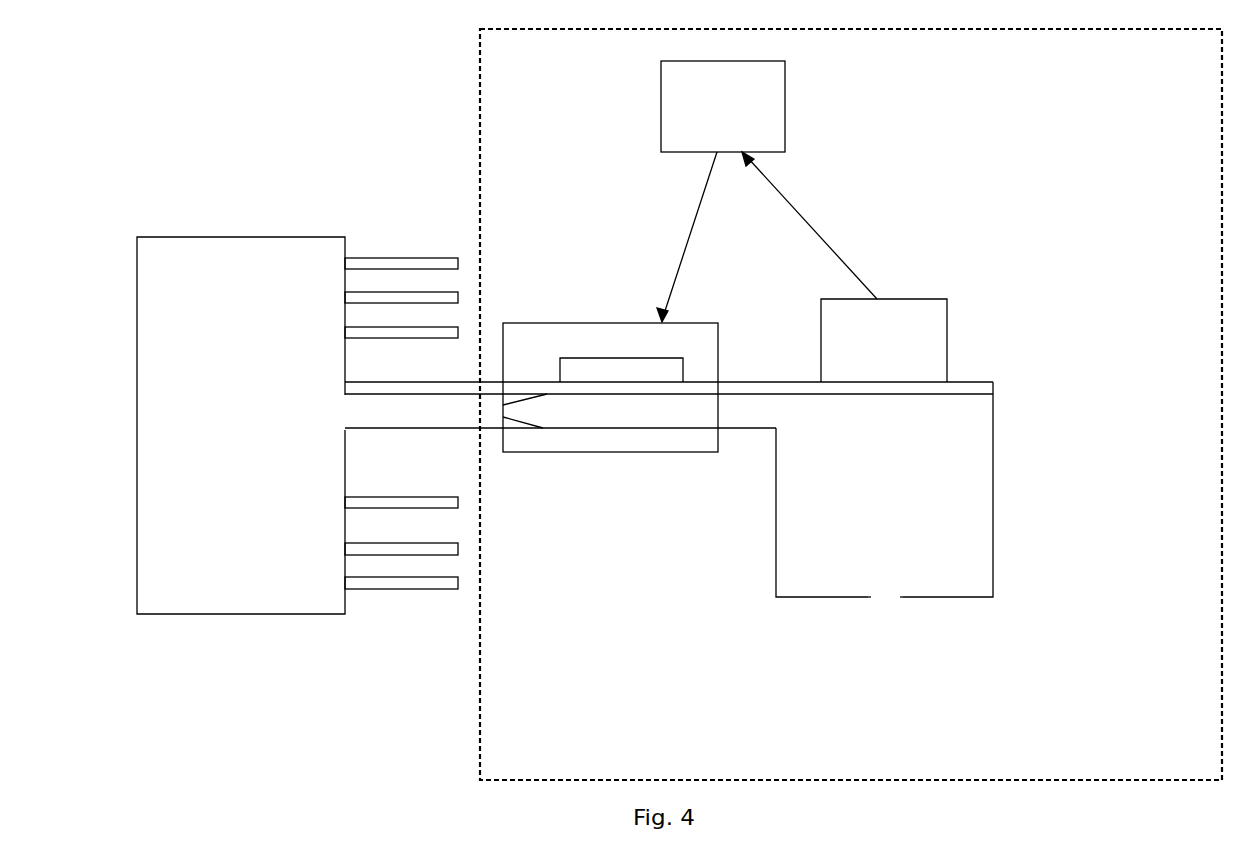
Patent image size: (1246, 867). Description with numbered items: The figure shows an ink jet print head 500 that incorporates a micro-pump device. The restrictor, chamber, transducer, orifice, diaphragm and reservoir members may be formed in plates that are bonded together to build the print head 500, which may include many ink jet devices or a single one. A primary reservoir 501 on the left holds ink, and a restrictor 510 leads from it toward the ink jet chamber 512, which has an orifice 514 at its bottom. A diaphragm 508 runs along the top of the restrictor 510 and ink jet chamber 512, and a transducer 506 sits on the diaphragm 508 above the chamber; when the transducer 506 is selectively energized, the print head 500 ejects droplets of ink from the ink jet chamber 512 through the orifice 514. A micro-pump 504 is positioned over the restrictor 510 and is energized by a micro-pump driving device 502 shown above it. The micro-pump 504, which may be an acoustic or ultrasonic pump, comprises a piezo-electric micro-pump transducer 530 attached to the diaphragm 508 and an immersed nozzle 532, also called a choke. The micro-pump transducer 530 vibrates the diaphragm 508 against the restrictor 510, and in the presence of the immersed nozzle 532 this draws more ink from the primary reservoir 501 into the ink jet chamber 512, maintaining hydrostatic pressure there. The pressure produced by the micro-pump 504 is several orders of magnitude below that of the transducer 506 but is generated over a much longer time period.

The print head 500 is at (851, 421).
The primary reservoir 501 is at (297, 479).
The micro-pump driving device 502 is at (682, 107).
The micro-pump 504 is at (615, 322).
The transducer 506 is at (900, 322).
The diaphragm 508 is at (746, 380).
The restrictor 510 is at (435, 417).
The ink jet chamber 512 is at (968, 515).
The orifice 514 is at (878, 595).
The micro-pump transducer 530 is at (627, 370).
The immersed nozzle 532 is at (515, 397).